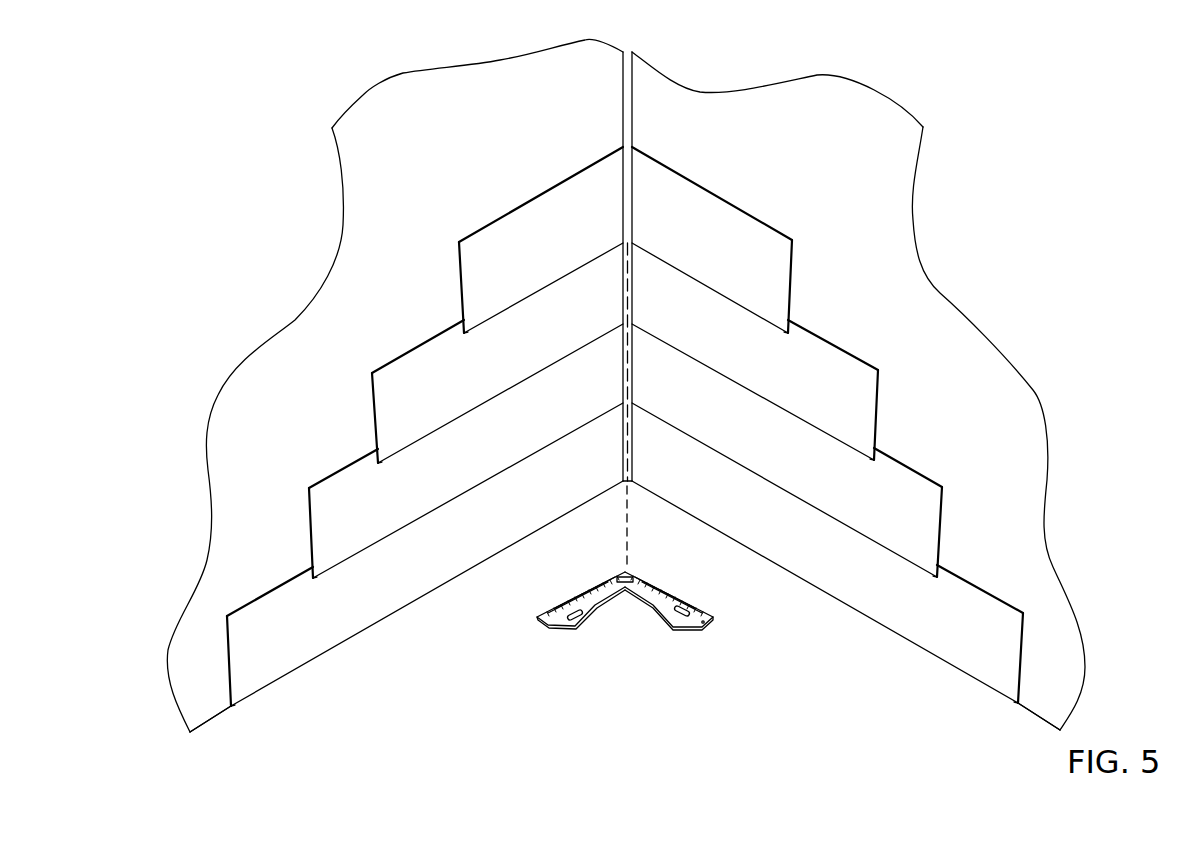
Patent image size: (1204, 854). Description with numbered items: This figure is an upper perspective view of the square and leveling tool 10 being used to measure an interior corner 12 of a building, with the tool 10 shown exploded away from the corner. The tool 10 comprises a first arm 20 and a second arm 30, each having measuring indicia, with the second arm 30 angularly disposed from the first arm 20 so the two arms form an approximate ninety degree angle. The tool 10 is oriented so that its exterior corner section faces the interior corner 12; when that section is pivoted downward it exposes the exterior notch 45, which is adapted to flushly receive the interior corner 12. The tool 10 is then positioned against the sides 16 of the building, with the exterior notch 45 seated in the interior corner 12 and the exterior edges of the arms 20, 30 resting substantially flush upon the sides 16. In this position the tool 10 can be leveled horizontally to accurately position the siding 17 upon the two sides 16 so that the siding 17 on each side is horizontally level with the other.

The square and leveling tool 10 is at (632, 659).
The interior corner 12 is at (633, 112).
The sides 16 is at (222, 718).
The siding 17 is at (395, 348).
The first arm 20 is at (668, 605).
The second arm 30 is at (597, 605).
The exterior notch 45 is at (633, 560).